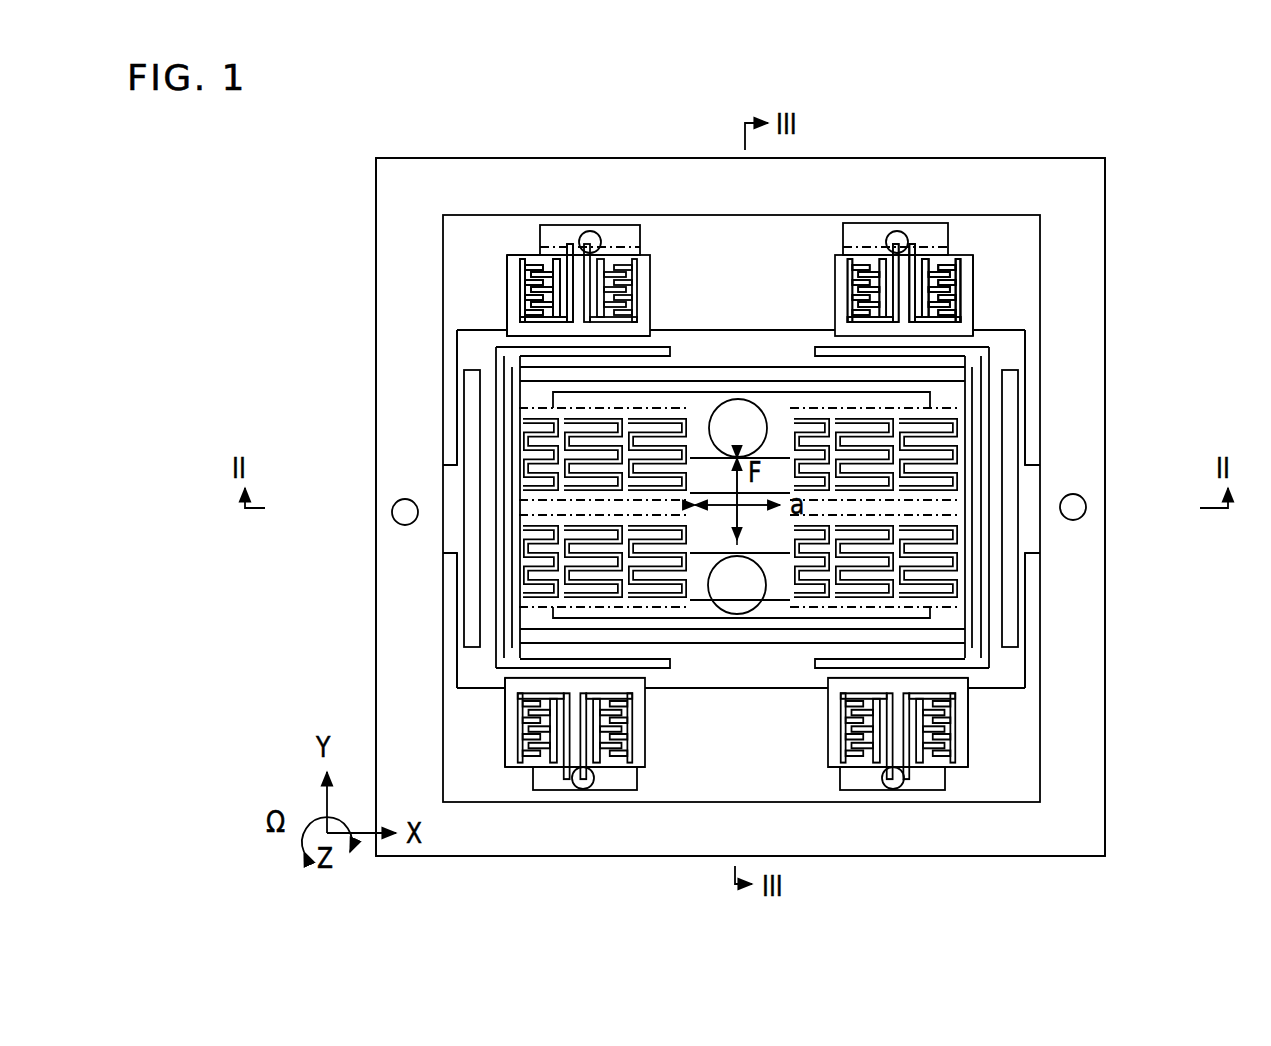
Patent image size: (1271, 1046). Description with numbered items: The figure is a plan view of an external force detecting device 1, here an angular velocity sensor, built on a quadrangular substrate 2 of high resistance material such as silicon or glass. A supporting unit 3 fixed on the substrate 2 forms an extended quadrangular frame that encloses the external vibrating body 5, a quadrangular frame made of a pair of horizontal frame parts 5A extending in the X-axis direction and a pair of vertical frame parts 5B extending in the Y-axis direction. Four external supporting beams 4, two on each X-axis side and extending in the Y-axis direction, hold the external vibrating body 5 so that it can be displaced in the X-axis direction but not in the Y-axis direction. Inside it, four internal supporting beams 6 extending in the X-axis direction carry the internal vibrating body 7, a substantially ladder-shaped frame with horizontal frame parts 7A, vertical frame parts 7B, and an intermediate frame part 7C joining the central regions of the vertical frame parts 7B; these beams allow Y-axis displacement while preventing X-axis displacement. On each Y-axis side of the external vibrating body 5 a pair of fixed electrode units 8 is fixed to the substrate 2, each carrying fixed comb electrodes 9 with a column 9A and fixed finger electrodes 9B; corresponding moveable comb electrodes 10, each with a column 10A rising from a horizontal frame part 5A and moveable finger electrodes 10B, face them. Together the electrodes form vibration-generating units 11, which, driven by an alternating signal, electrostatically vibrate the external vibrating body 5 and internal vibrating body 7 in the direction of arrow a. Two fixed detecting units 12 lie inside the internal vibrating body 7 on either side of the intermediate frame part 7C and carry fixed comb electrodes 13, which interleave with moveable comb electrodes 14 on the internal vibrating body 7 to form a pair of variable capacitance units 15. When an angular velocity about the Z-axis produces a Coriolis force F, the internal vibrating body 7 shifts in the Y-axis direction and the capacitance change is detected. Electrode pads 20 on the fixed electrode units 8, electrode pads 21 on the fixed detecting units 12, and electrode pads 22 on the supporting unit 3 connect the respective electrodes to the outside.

The external force detecting device 1 is at (366, 161).
The substrate 2 is at (460, 226).
The supporting unit 3 is at (385, 225).
The external supporting beams 4 is at (463, 408).
The external vibrating body 5 is at (1005, 627).
The horizontal frame parts 5A is at (988, 327).
The vertical frame parts 5B is at (485, 636).
The internal supporting beams 6 is at (520, 352).
The internal vibrating body 7 is at (968, 598).
The horizontal frame parts 7A is at (532, 642).
The vertical frame parts 7B is at (460, 390).
The intermediate frame part 7C is at (503, 505).
The fixed electrode units 8 is at (552, 235).
The fixed comb electrodes 9 is at (570, 268).
The column 9A is at (905, 265).
The fixed finger electrodes 9B is at (950, 272).
The moveable comb electrodes 10 is at (515, 285).
The column 10A is at (520, 312).
The moveable finger electrodes 10B is at (545, 270).
The vibration-generating units 11 is at (506, 248).
The fixed detecting units 12 is at (789, 400).
The fixed comb electrodes 13 is at (525, 578).
The moveable comb electrodes 14 is at (530, 462).
The variable capacitance unit 15 is at (508, 432).
The electrode pads 20 is at (591, 232).
The electrode pads 21 is at (738, 428).
The electrode pads 22 is at (392, 512).